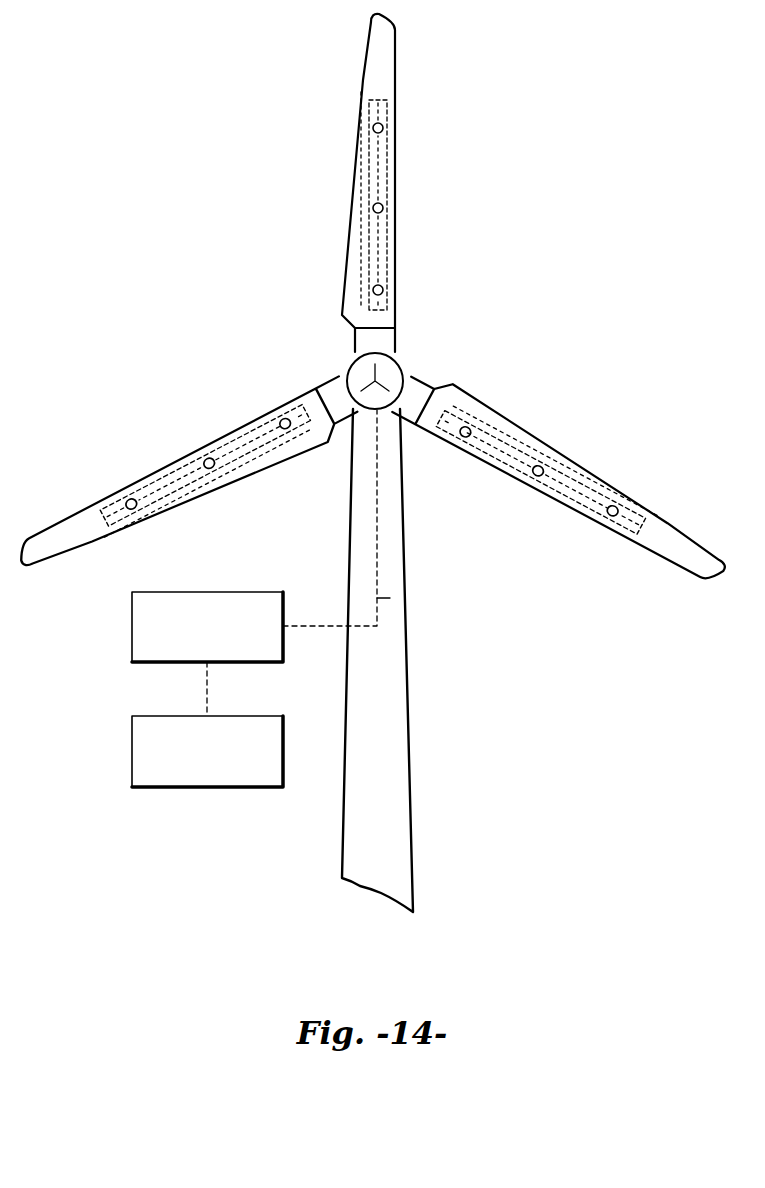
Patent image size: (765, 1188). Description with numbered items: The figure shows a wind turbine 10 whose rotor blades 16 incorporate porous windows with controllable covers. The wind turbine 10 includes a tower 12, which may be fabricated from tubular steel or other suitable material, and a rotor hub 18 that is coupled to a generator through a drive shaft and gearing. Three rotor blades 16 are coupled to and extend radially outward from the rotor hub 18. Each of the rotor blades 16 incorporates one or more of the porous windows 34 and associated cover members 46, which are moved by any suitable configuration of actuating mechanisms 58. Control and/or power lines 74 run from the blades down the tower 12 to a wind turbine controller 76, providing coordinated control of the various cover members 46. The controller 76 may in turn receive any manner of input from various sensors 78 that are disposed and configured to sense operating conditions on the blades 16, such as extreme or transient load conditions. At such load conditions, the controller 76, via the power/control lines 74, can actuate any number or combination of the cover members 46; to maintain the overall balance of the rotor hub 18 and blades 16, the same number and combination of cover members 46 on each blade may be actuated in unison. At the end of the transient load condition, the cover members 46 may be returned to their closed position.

The wind turbine 10 is at (519, 119).
The tower 12 is at (395, 803).
The rotor blades 16 is at (384, 78).
The rotor hub 18 is at (388, 347).
The porous windows 34 is at (385, 273).
The cover members 46 is at (362, 250).
The actuating mechanisms 58 is at (360, 107).
The control and/or power lines 74 is at (390, 598).
The wind turbine controller 76 is at (142, 630).
The sensors 78 is at (142, 755).